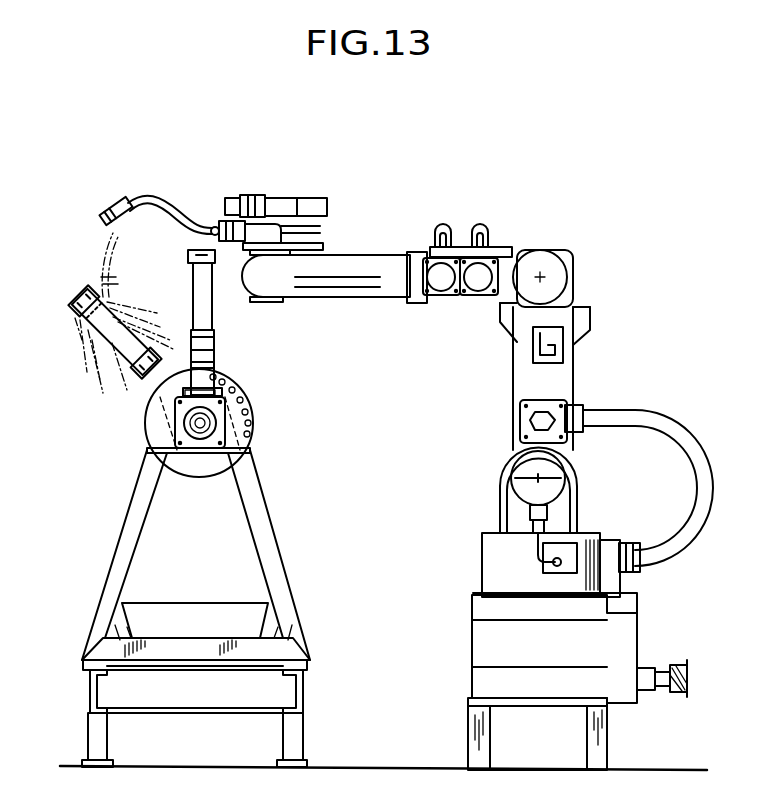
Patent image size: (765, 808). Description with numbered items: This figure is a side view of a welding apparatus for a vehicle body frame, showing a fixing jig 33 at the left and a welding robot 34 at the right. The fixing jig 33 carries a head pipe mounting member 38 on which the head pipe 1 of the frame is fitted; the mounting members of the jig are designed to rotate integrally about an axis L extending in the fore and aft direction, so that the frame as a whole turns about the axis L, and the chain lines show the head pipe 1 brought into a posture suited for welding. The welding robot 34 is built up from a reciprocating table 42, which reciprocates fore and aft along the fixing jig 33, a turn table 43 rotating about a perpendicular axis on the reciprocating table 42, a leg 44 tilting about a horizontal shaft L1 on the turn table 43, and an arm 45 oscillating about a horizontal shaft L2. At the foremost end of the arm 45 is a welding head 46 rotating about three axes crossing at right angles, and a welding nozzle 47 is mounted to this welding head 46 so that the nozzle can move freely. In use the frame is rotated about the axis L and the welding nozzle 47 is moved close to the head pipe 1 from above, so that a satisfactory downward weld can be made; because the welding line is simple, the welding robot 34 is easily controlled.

The head pipe 1 is at (85, 300).
The fixing jig 33 is at (112, 491).
The welding robot 34 is at (575, 500).
The head pipe mounting member 38 is at (207, 347).
The reciprocating table 42 is at (620, 650).
The turn table 43 is at (583, 582).
The leg 44 is at (527, 383).
The arm 45 is at (362, 267).
The welding head 46 is at (270, 200).
The welding nozzle 47 is at (106, 217).
The axis L is at (217, 432).
The horizontal shaft L1 is at (538, 478).
The horizontal shaft L2 is at (542, 277).